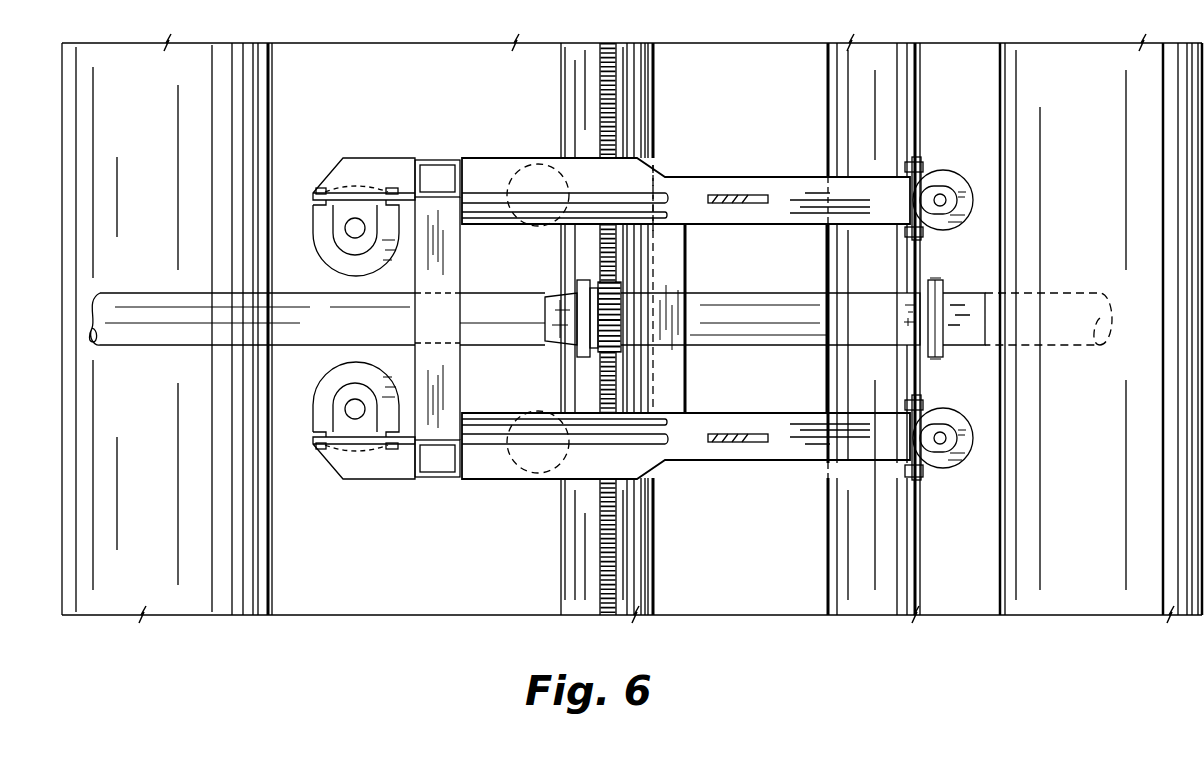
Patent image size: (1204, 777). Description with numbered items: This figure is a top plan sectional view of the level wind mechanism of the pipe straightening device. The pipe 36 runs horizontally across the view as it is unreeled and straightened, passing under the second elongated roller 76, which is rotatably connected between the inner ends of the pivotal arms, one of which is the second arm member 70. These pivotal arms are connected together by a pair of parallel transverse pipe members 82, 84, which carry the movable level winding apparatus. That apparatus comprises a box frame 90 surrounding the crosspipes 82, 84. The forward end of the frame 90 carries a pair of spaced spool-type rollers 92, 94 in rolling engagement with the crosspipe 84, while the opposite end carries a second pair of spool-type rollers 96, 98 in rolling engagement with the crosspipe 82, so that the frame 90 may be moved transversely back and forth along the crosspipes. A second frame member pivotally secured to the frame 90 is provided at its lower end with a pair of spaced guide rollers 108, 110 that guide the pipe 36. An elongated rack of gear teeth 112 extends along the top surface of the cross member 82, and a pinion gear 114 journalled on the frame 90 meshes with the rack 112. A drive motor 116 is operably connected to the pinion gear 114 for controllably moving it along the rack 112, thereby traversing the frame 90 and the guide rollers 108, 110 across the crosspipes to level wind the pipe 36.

The pipe 36 is at (162, 328).
The second arm member 70 is at (240, 553).
The second elongated roller 76 is at (1023, 562).
The transverse pipe member 82 is at (577, 532).
The transverse pipe member 84 is at (847, 518).
The box frame 90 is at (803, 187).
The spool-type roller 92 is at (960, 183).
The spool-type roller 94 is at (966, 460).
The spool-type roller 96 is at (522, 228).
The spool-type roller 98 is at (540, 412).
The guide roller 108 is at (320, 398).
The guide roller 110 is at (322, 238).
The rack of gear teeth 112 is at (612, 103).
The pinion gear 114 is at (618, 320).
The drive motor 116 is at (557, 297).